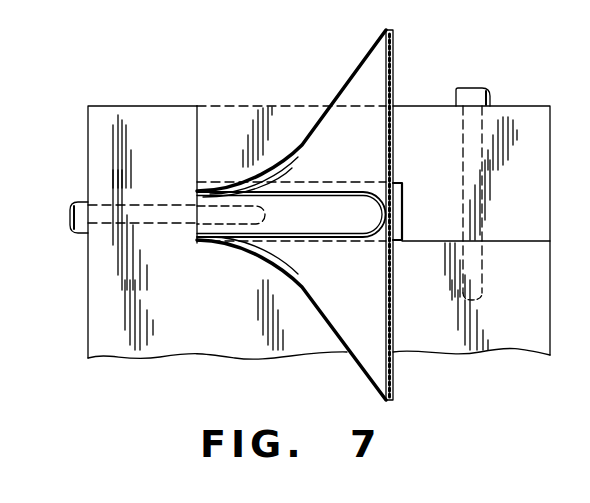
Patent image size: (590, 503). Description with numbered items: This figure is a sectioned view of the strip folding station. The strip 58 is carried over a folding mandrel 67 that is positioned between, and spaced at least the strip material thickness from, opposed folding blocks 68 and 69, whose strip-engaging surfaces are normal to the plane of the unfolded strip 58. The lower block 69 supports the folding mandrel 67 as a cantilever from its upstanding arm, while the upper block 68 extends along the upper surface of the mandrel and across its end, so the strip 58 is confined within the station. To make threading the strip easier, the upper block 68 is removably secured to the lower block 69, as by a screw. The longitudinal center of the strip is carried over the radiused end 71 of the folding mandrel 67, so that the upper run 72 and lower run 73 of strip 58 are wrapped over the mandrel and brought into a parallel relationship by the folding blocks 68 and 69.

The strip 58 is at (394, 68).
The folding mandrel 67 is at (319, 222).
The upper folding block 68 is at (228, 143).
The lower folding block 69 is at (222, 255).
The radiused end 71 is at (398, 228).
The upper run 72 is at (305, 188).
The lower run 73 is at (303, 243).